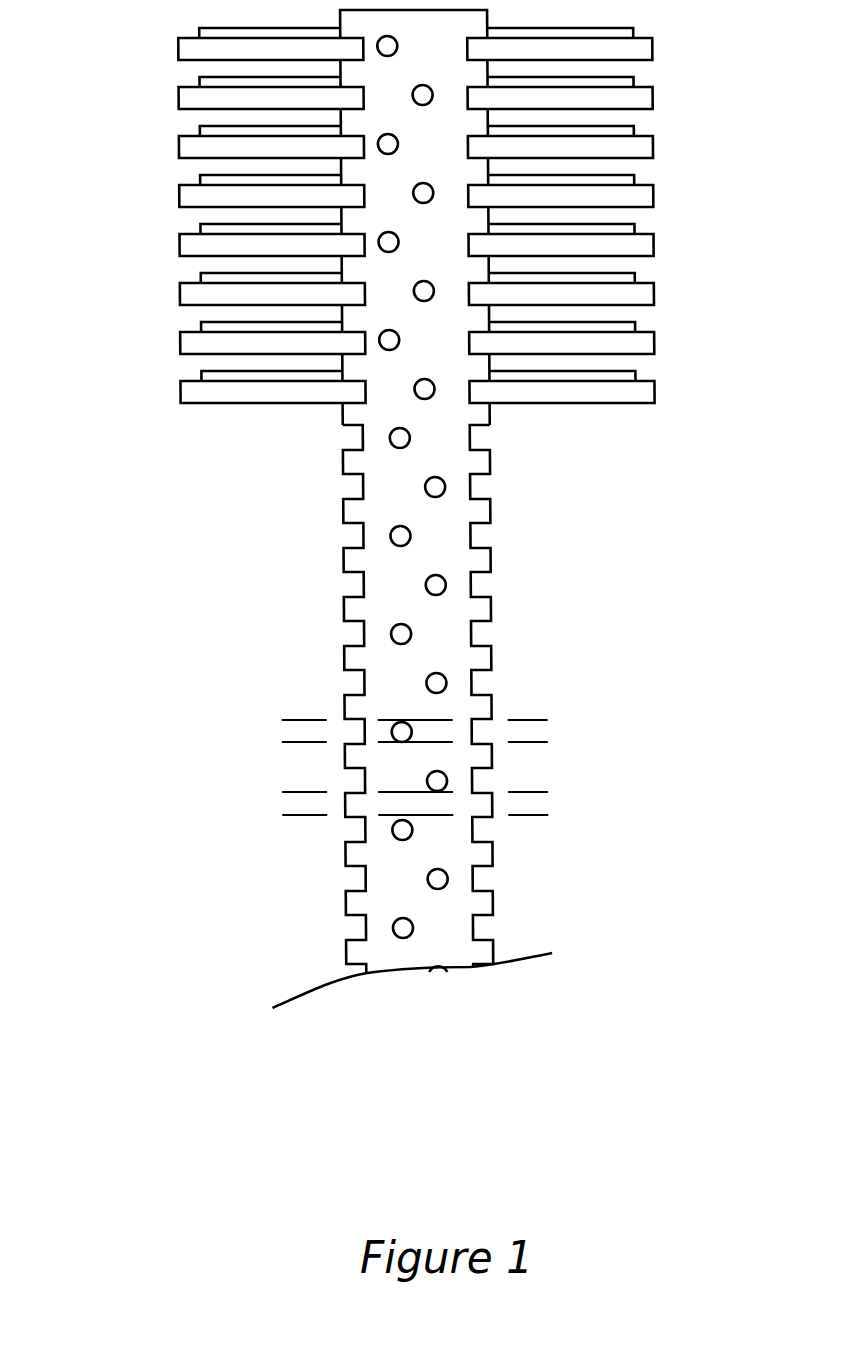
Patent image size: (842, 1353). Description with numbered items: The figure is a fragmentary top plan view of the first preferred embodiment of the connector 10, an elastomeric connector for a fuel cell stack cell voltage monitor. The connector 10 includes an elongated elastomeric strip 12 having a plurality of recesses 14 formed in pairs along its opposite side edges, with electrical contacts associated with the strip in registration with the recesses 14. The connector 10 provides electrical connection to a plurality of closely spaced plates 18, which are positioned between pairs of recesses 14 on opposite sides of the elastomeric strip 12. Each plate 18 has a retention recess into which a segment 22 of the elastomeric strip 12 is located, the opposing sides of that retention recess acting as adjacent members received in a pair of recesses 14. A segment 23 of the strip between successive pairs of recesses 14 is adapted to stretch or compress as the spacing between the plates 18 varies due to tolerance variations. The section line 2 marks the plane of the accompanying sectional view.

The section line 2- 2 is at (705, 72).
The connector 10 is at (417, 509).
The elastomeric strip 12 is at (275, 805).
The recesses 14 is at (355, 488).
The plates 18 is at (178, 243).
The segment 22 is at (272, 722).
The segment 23 is at (505, 603).